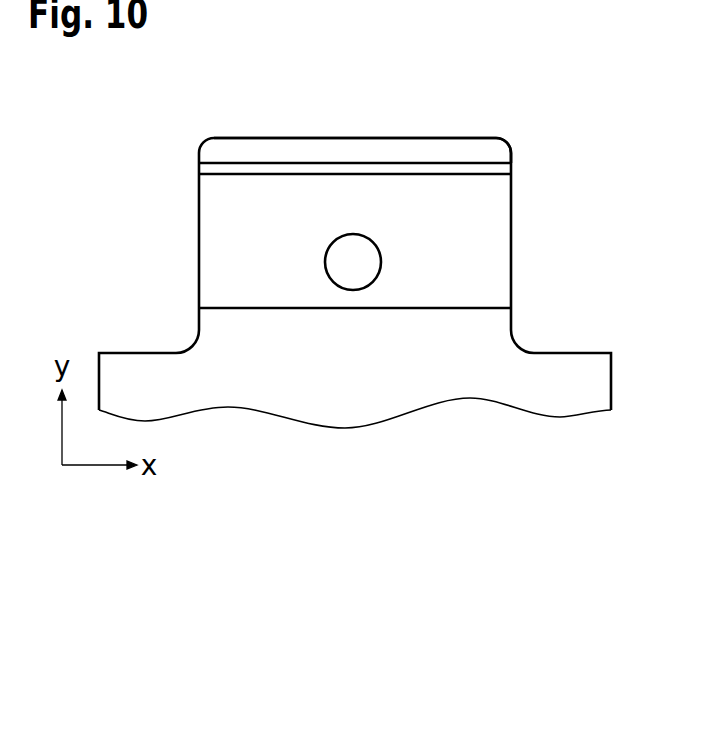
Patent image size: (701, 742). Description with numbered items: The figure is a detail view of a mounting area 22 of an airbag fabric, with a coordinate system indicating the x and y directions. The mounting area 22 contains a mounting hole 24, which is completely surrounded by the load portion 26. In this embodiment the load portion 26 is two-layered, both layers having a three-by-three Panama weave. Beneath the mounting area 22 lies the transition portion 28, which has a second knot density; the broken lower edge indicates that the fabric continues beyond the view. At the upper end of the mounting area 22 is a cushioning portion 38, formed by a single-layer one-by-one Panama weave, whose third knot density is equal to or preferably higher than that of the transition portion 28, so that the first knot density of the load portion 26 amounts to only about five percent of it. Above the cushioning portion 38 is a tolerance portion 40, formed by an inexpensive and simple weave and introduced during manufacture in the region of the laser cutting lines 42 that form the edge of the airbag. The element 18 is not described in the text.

The base body 18 is at (585, 370).
The mounting area 22 is at (155, 172).
The mounting hole 24 is at (355, 262).
The load portion 26 is at (500, 222).
The transition portion 28 is at (302, 395).
The cushioning portion 38 is at (500, 171).
The tolerance portion 40 is at (465, 155).
The cutting lines 42 is at (295, 138).